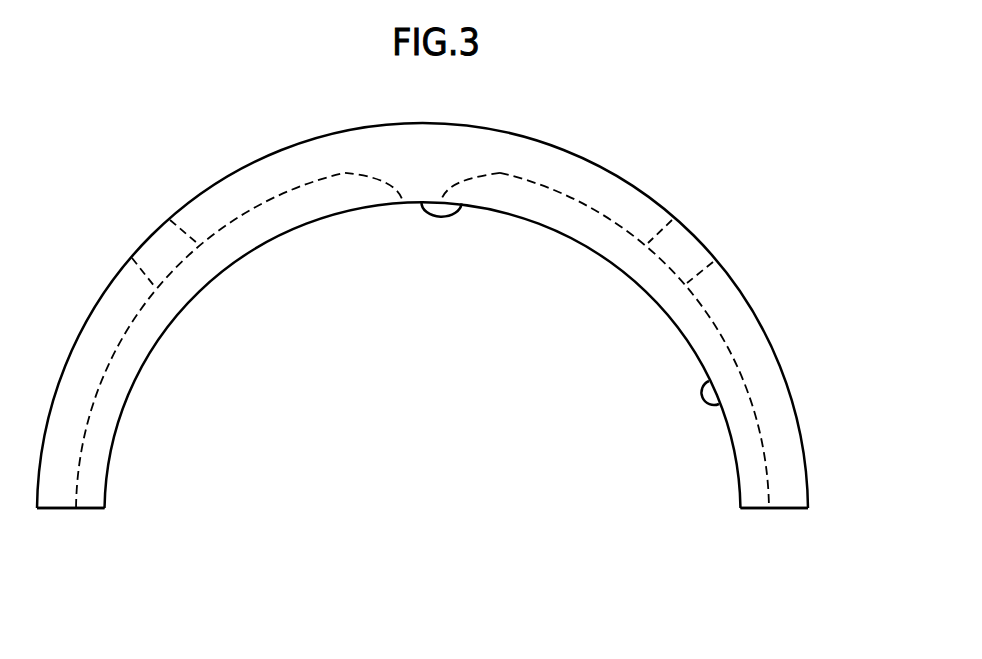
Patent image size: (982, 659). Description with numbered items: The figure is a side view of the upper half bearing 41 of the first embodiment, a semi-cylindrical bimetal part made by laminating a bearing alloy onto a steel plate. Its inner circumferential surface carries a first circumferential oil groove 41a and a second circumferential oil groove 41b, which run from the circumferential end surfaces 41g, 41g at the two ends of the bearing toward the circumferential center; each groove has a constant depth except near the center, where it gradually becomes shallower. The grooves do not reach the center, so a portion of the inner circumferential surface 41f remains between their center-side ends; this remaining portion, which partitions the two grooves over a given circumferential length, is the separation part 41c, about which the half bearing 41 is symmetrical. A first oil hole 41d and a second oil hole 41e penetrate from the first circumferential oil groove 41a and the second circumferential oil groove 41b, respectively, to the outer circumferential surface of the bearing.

The half bearing 41 is at (730, 168).
The first circumferential oil groove 41a is at (227, 246).
The second circumferential oil groove 41b is at (618, 247).
The separation part 41c is at (467, 203).
The first oil hole 41d is at (165, 254).
The second oil hole 41e is at (679, 252).
The inner circumferential surface 41f is at (722, 403).
The circumferential end surfaces 41g is at (88, 509).